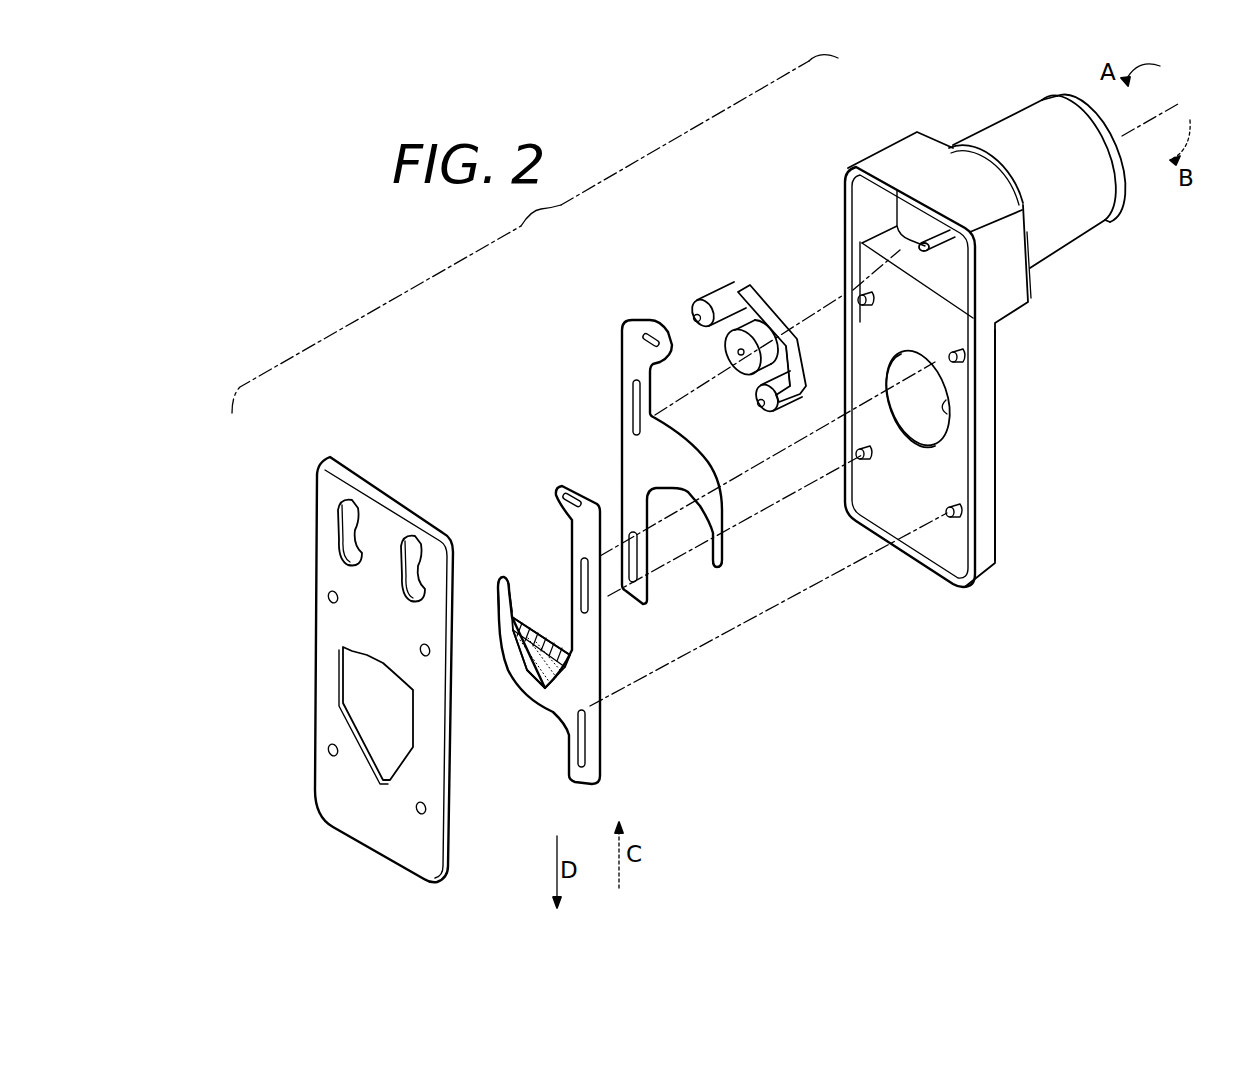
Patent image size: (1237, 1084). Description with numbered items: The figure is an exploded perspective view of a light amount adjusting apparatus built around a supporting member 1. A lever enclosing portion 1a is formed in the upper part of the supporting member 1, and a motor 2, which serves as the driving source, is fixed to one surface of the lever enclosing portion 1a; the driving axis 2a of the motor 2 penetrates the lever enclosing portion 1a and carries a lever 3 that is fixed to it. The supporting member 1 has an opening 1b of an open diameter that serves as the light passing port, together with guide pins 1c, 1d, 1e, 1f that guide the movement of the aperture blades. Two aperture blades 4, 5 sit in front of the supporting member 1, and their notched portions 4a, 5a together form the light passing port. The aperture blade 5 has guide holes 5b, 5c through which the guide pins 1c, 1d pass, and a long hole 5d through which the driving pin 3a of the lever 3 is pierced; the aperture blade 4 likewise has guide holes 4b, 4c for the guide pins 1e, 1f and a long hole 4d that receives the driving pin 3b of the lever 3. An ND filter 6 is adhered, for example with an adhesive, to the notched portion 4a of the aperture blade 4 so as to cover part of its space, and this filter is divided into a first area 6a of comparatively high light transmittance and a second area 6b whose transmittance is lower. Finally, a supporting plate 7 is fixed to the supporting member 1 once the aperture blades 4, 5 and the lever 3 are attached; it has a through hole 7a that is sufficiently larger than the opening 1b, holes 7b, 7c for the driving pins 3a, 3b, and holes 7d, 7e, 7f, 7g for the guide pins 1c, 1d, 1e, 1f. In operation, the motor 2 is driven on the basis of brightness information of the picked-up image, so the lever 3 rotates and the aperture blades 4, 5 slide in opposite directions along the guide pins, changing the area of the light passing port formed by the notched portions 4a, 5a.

The supporting member 1 is at (990, 476).
The lever enclosing portion 1a is at (1005, 290).
The opening 1b is at (948, 407).
The guide pin 1c is at (862, 296).
The guide pin 1d is at (858, 462).
The guide pin 1e is at (968, 358).
The guide pin 1f is at (960, 516).
The motor 2 is at (996, 124).
The driving axis 2a is at (926, 246).
The lever 3 is at (756, 290).
The driving pin 3a is at (690, 305).
The driving pin 3b is at (765, 405).
The aperture blade 4 is at (596, 640).
The notched portion 4a is at (508, 582).
The guide hole 4b is at (586, 600).
The guide hole 4c is at (584, 758).
The long hole 4d is at (557, 488).
The aperture blade 5 is at (636, 468).
The notched portion 5a is at (702, 522).
The guide hole 5b is at (634, 412).
The guide hole 5c is at (637, 572).
The long hole 5d is at (643, 330).
The ND filter 6 is at (562, 675).
The first area 6a is at (548, 630).
The second area 6b is at (522, 665).
The supporting plate 7 is at (449, 812).
The through hole 7a is at (372, 780).
The hole 7b is at (352, 498).
The hole 7c is at (428, 512).
The hole 7d is at (326, 597).
The hole 7e is at (326, 752).
The hole 7f is at (434, 650).
The hole 7g is at (418, 820).